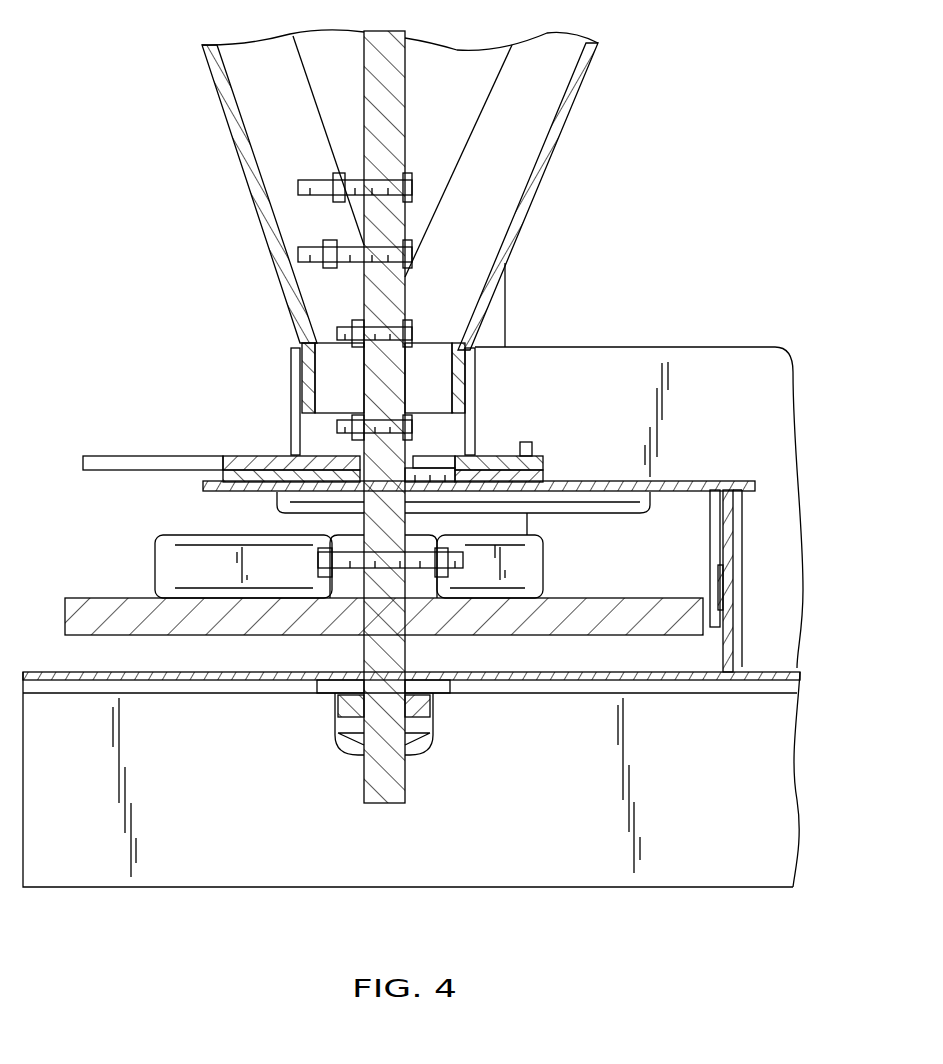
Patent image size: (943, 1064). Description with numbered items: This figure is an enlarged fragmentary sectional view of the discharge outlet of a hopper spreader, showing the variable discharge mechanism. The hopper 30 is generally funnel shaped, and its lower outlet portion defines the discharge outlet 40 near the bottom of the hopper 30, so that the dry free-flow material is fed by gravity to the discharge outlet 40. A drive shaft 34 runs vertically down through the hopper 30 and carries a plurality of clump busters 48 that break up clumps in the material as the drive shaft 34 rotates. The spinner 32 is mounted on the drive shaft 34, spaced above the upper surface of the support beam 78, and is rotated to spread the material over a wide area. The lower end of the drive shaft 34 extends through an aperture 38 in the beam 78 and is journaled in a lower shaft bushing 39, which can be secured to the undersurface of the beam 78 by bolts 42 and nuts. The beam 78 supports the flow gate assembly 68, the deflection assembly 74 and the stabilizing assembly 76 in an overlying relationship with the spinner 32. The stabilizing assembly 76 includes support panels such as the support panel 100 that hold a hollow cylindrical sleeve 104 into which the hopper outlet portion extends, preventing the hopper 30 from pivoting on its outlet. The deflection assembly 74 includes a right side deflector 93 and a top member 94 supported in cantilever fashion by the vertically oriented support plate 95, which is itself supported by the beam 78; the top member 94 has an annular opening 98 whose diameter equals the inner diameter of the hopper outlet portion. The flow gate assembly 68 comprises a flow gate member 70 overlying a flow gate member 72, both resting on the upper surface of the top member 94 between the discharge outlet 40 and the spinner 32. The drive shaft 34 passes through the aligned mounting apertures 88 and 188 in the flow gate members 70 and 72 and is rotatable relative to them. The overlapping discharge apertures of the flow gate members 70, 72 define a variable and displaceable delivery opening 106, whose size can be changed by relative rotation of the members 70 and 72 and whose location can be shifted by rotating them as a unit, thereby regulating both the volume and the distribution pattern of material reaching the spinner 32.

The drive shaft 34 is at (407, 53).
The hopper 30 is at (590, 80).
The clump busters 48 is at (323, 243).
The discharge outlet 40 is at (432, 343).
The bolts 42 is at (458, 363).
The flow gate assembly 68 is at (253, 403).
The mounting aperture 88 is at (427, 458).
The sleeve 104 is at (480, 393).
The flow gate member 70 is at (535, 453).
The stabilizing assembly 76 is at (700, 340).
The support panel 100 is at (762, 350).
The annular opening 98 is at (307, 453).
The delivery opening 106 is at (477, 450).
The flow gate member 72 is at (545, 476).
The top member 94 is at (683, 482).
The deflection assembly 74 is at (743, 478).
The spinner 32 is at (95, 598).
The right side deflector 93 is at (705, 520).
The mounting aperture 188 is at (447, 473).
The support plate 95 is at (742, 588).
The aperture 38 is at (363, 666).
The lower shaft bushing 39 is at (430, 744).
The support beam 78 is at (790, 758).